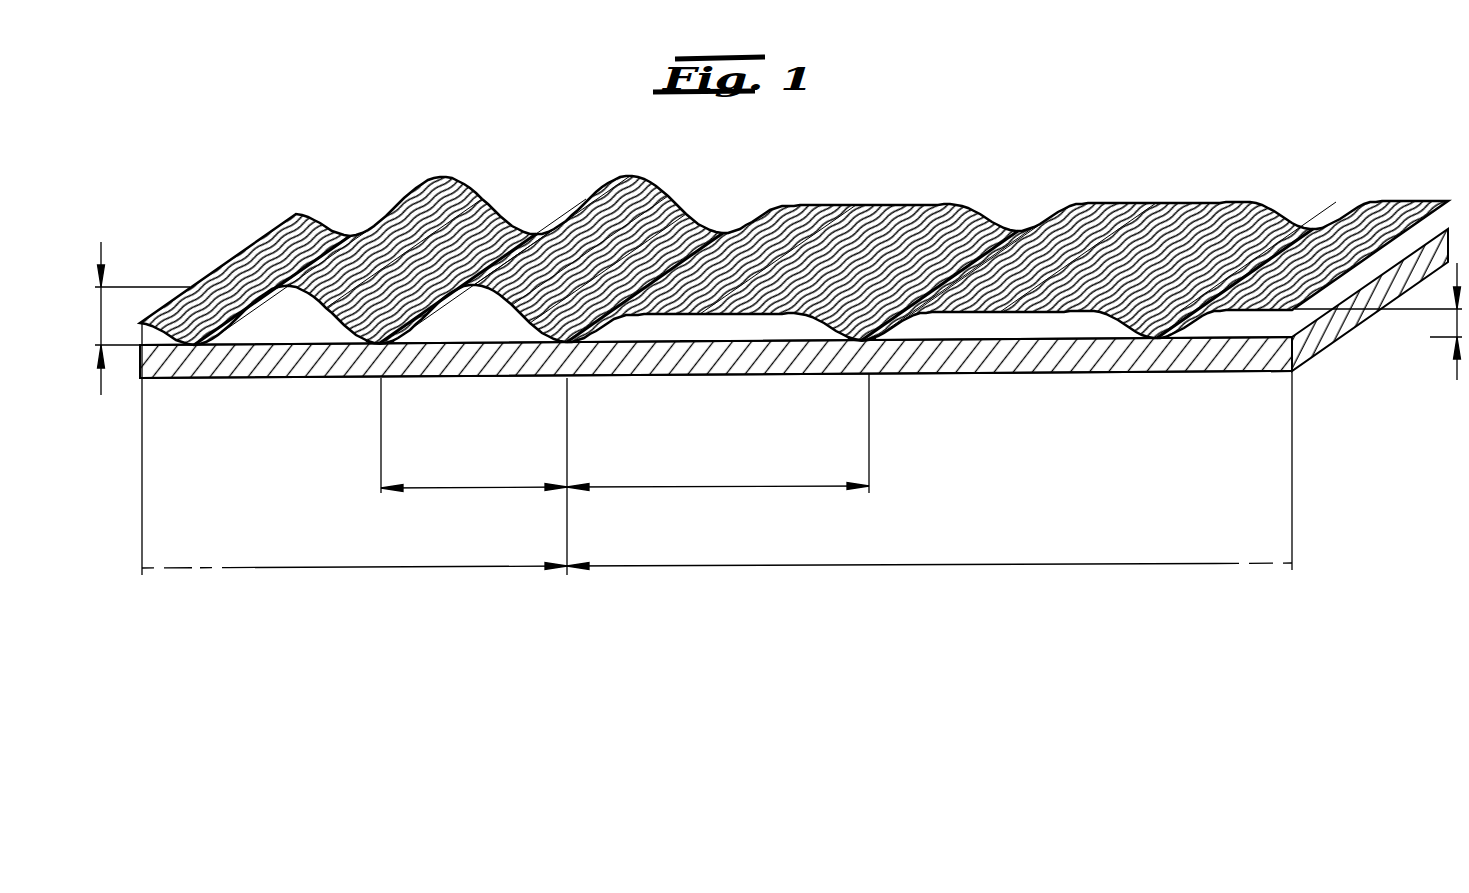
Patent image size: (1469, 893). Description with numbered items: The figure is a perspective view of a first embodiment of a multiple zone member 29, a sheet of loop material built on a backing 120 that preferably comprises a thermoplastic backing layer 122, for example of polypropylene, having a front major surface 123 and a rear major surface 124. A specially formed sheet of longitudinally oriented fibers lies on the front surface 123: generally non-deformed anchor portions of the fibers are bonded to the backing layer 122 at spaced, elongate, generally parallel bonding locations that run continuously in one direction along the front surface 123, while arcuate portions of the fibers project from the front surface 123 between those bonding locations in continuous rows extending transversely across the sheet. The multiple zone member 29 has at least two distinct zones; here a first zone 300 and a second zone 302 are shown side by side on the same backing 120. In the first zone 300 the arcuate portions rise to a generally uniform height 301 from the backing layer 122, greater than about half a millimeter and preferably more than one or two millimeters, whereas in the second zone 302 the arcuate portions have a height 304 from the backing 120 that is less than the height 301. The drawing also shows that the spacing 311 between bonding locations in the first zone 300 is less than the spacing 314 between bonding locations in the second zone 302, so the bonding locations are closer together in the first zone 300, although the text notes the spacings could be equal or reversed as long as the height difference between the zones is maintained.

The multiple zone member 29 is at (992, 197).
The backing 120 is at (1225, 360).
The backing layer 122 is at (707, 342).
The front surface 123 is at (707, 342).
The rear surface 124 is at (1140, 373).
The first zone 300 is at (354, 449).
The height of arcuate portions in first zone 301 is at (102, 317).
The second zone 302 is at (929, 470).
The height of arcuate portions in second zone 304 is at (1449, 320).
The spacing between bonding locations in first zone 311 is at (474, 451).
The spacing between bonding locations in second zone 314 is at (718, 449).